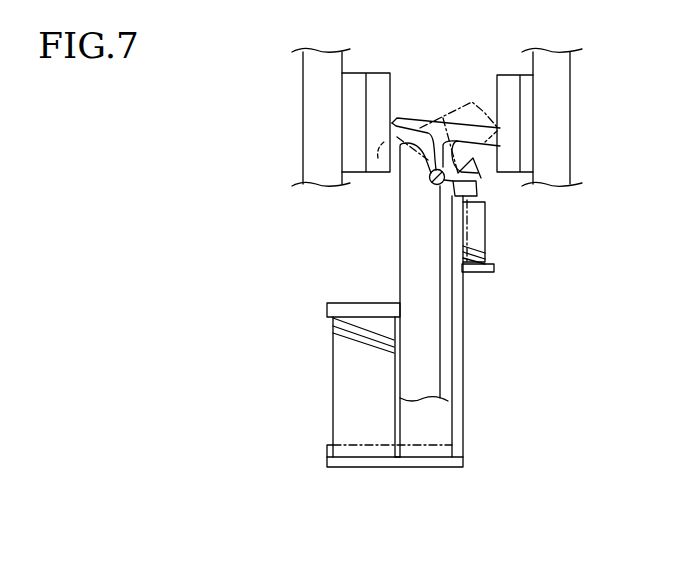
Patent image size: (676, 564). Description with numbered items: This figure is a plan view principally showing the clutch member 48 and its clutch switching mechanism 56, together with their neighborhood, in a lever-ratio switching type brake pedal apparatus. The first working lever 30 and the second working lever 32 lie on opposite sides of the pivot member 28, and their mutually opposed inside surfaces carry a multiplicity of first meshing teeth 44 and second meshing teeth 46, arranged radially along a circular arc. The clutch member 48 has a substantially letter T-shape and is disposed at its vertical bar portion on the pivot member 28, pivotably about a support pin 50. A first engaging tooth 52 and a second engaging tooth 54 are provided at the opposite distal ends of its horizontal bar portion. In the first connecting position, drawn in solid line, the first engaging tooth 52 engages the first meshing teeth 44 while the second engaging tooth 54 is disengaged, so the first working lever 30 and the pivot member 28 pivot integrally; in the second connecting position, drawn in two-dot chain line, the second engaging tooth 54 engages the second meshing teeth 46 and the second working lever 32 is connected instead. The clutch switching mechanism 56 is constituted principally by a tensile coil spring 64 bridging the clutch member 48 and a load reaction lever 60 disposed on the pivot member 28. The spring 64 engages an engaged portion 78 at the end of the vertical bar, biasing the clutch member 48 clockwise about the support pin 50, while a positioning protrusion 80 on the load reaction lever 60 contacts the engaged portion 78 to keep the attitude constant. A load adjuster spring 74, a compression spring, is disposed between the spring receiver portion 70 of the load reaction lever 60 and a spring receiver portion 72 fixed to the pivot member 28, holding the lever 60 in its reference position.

The pivot member 28 is at (410, 270).
The first working lever 30 is at (563, 87).
The second working lever 32 is at (315, 87).
The first meshing teeth 44 is at (510, 160).
The second meshing teeth 46 is at (375, 117).
The clutch member 48 is at (460, 108).
The support pin 50 is at (431, 186).
The first engaging tooth 52 is at (498, 131).
The second engaging tooth 54 is at (398, 117).
The clutch switching mechanism 56 is at (493, 287).
The load reaction lever 60 is at (435, 486).
The tensile coil spring 64 is at (473, 273).
The spring receiver portion 70 is at (340, 461).
The spring receiver portion 72 is at (327, 310).
The load adjuster spring 74 is at (357, 340).
The engaged portion 78 is at (457, 178).
The positioning protrusion 80 is at (462, 222).